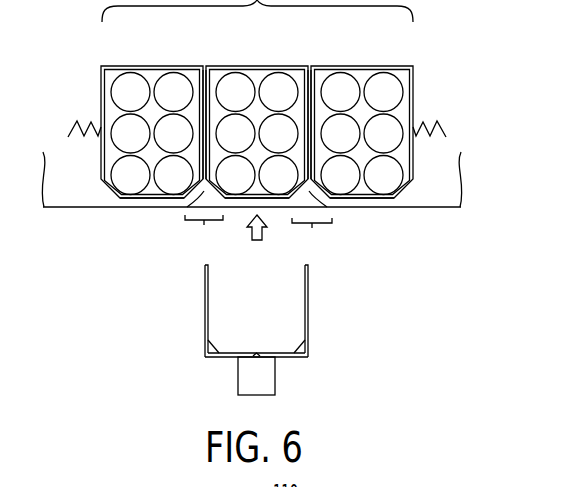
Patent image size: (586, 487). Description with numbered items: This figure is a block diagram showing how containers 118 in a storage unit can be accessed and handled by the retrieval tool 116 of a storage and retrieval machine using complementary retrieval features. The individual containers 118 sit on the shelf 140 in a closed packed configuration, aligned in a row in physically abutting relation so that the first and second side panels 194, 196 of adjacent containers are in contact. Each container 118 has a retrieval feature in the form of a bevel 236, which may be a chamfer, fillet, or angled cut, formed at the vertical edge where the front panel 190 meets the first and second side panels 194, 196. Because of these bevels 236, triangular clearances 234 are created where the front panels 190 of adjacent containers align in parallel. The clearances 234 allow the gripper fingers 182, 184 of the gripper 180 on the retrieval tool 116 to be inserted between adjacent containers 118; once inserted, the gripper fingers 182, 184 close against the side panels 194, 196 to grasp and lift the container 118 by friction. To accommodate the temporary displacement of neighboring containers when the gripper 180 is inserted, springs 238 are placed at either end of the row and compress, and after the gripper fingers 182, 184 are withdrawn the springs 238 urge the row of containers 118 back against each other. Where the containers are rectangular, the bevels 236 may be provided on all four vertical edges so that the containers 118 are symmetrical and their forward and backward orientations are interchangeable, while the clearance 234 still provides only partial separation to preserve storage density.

The retrieval tool 116 is at (257, 351).
The container 118 is at (158, 66).
The shelf 140 is at (450, 193).
The gripper 180 is at (229, 358).
The gripper finger 182 is at (205, 298).
The gripper finger 184 is at (308, 298).
The front panel 190 is at (143, 199).
The first side panel 194 is at (204, 66).
The second side panel 196 is at (260, 99).
The clearance 234 is at (258, 236).
The bevel 236 is at (201, 190).
The spring 238 is at (77, 121).